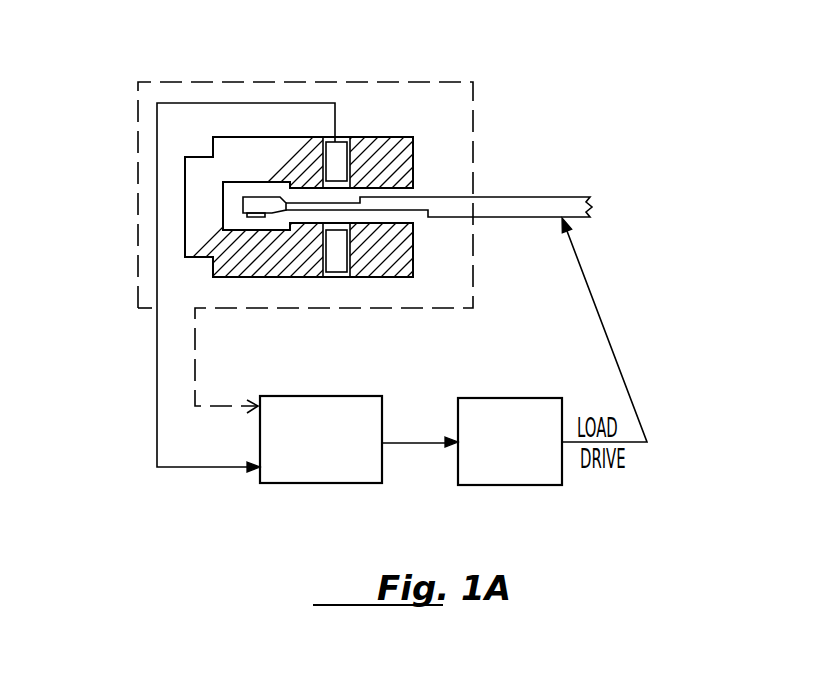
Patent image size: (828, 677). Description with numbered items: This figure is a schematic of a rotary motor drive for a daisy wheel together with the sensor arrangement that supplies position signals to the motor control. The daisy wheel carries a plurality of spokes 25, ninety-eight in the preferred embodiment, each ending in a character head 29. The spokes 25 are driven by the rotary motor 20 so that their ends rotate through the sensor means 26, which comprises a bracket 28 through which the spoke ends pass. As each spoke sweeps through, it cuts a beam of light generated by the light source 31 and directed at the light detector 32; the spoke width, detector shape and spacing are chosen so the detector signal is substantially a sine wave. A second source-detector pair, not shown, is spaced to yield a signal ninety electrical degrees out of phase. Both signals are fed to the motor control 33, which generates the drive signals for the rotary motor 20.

The rotary motor 20 is at (528, 517).
The spokes 25 is at (606, 163).
The sensor means 26 is at (447, 35).
The bracket 28 is at (502, 128).
The character head 29 is at (250, 200).
The light source 31 is at (350, 320).
The light detector 32 is at (413, 113).
The motor control 33 is at (247, 522).